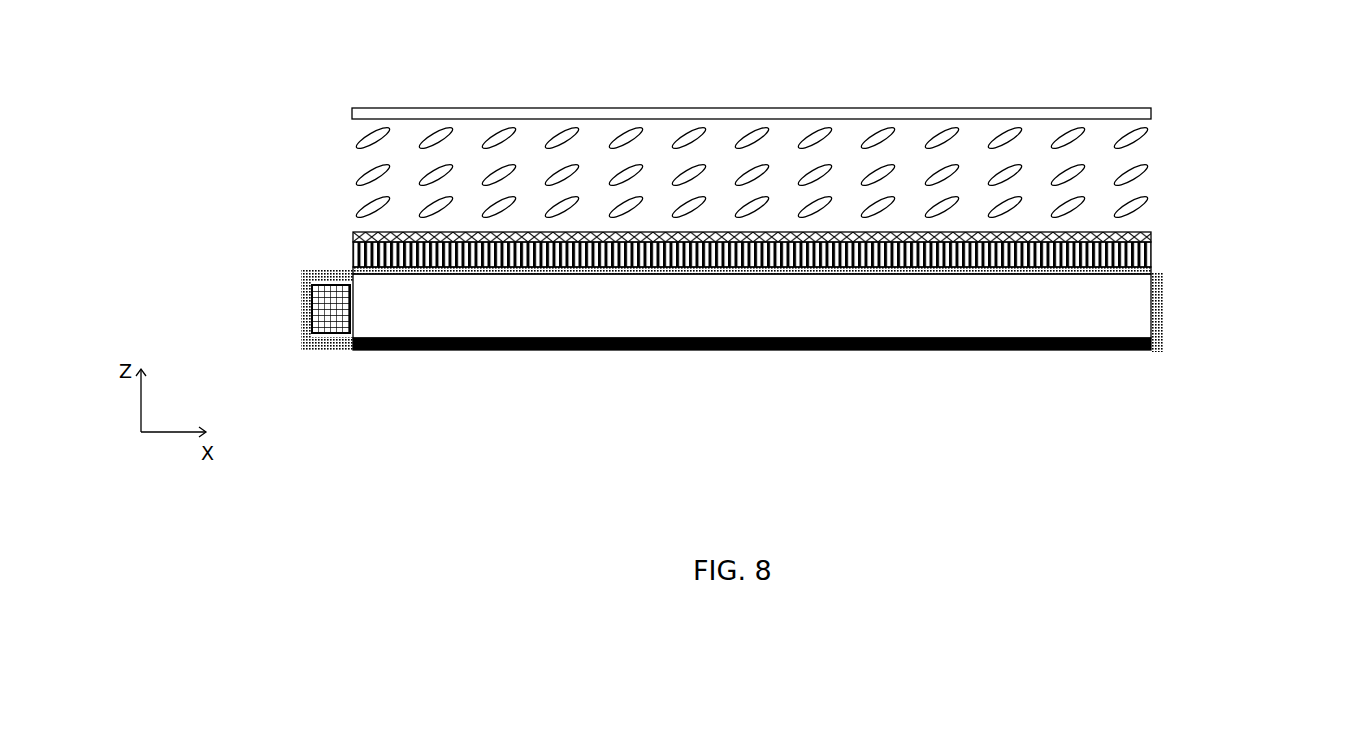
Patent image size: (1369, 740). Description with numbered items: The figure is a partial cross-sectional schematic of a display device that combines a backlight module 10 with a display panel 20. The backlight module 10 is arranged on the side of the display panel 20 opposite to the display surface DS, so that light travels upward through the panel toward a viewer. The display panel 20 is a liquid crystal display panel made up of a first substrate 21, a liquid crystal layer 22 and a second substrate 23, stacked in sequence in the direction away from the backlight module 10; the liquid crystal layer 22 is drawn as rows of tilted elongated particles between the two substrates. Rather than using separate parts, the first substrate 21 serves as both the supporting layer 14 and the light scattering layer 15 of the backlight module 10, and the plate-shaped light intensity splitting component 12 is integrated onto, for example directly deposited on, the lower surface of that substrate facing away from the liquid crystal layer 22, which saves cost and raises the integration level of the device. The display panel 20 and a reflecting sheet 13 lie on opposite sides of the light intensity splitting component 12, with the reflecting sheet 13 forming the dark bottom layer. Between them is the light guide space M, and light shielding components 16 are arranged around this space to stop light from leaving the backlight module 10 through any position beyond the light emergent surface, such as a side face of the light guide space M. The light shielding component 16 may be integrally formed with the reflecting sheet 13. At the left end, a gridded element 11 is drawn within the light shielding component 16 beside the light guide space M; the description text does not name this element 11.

The backlight module 10 is at (1270, 228).
The light source / light emitting element 11 is at (330, 333).
The plate-shaped light intensity splitting component 12 is at (1151, 263).
The reflecting sheet 13 is at (485, 350).
The supporting layer 14 is at (352, 259).
The light scattering layer 15 is at (352, 233).
The light shielding component 16 is at (300, 285).
The display panel 20 is at (212, 250).
The first substrate 21 is at (253, 230).
The liquid crystal layer 22 is at (357, 185).
The second substrate 23 is at (357, 110).
The light guide space M is at (1055, 308).
The display surface DS is at (1060, 107).